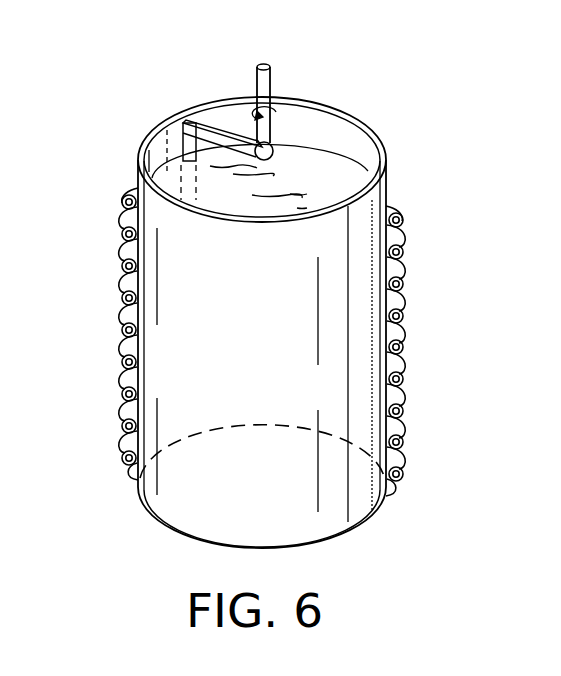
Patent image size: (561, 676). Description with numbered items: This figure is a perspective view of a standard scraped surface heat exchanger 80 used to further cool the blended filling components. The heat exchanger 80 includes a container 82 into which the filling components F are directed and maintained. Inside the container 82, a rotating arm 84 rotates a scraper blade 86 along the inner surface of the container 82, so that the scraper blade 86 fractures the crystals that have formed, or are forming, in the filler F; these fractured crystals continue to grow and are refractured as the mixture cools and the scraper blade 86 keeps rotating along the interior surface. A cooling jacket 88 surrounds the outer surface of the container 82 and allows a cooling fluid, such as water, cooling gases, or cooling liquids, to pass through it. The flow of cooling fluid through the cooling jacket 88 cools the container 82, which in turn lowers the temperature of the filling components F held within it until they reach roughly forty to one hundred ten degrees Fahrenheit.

The scraped surface heat exchanger 80 is at (397, 131).
The container 82 is at (331, 102).
The rotating arm 84 is at (207, 126).
The scraper blade 86 is at (180, 140).
The cooling jacket 88 is at (121, 200).
The filling components F is at (338, 177).